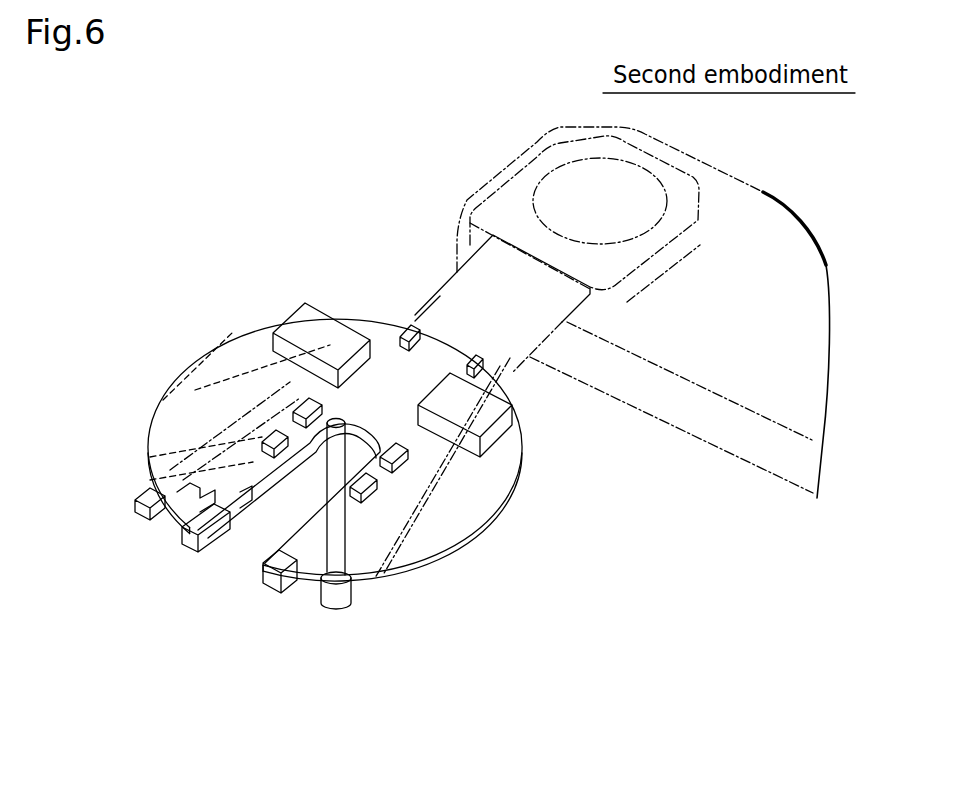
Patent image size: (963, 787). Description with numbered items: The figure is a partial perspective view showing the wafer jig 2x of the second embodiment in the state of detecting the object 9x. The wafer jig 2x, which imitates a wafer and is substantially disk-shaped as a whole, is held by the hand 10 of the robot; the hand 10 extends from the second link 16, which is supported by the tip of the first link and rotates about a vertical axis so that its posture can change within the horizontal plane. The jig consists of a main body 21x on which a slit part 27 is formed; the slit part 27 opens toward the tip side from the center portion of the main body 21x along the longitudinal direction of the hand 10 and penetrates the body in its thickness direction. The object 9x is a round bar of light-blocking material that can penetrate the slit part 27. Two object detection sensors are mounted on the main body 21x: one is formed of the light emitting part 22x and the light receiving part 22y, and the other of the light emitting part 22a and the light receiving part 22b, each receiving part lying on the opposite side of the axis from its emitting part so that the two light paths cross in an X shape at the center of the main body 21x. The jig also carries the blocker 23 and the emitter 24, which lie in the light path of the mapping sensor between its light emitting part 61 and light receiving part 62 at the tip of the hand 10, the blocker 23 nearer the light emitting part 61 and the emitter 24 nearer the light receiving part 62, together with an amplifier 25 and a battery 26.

The wafer jig 2x is at (192, 237).
The hand 10 is at (420, 292).
The second link 16 is at (713, 167).
The main body 21x is at (233, 373).
The light emitting part 22a is at (407, 457).
The light receiving part 22b is at (245, 455).
The light emitting part 22x is at (377, 487).
The light receiving part 22y is at (255, 440).
The blocker 23 is at (268, 592).
The emitter 24 is at (183, 548).
The amplifier 25 is at (512, 428).
The battery 26 is at (303, 310).
The slit part 27 is at (243, 503).
The light emitting part 61 is at (327, 597).
The light receiving part 62 is at (167, 523).
The object 9x is at (327, 465).